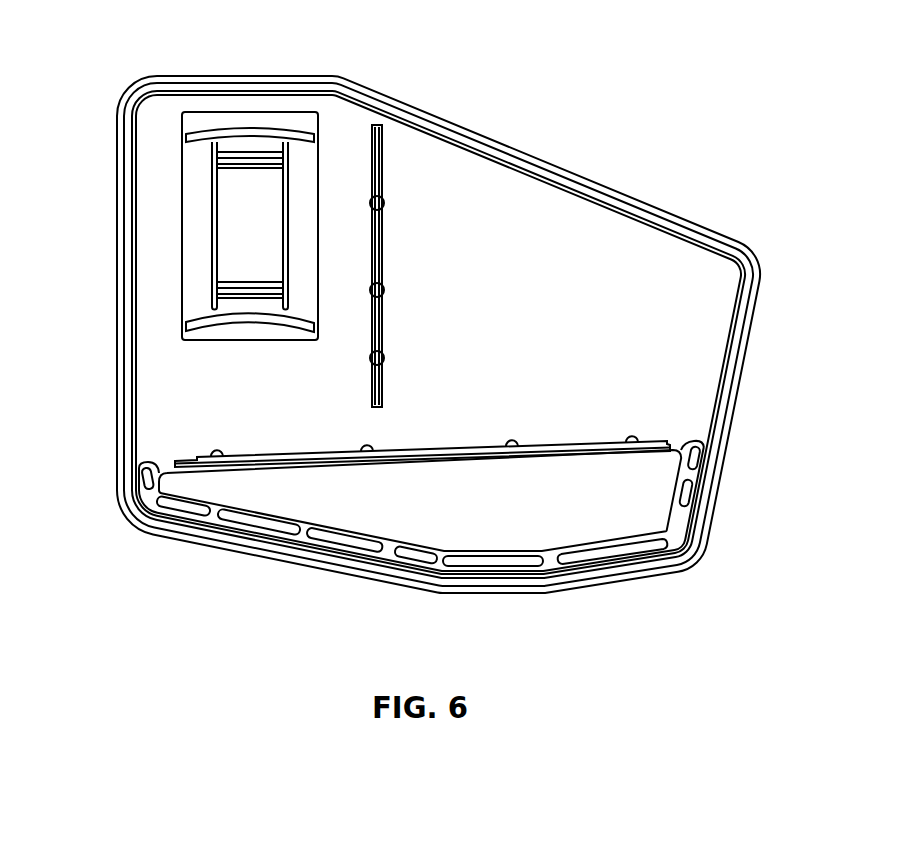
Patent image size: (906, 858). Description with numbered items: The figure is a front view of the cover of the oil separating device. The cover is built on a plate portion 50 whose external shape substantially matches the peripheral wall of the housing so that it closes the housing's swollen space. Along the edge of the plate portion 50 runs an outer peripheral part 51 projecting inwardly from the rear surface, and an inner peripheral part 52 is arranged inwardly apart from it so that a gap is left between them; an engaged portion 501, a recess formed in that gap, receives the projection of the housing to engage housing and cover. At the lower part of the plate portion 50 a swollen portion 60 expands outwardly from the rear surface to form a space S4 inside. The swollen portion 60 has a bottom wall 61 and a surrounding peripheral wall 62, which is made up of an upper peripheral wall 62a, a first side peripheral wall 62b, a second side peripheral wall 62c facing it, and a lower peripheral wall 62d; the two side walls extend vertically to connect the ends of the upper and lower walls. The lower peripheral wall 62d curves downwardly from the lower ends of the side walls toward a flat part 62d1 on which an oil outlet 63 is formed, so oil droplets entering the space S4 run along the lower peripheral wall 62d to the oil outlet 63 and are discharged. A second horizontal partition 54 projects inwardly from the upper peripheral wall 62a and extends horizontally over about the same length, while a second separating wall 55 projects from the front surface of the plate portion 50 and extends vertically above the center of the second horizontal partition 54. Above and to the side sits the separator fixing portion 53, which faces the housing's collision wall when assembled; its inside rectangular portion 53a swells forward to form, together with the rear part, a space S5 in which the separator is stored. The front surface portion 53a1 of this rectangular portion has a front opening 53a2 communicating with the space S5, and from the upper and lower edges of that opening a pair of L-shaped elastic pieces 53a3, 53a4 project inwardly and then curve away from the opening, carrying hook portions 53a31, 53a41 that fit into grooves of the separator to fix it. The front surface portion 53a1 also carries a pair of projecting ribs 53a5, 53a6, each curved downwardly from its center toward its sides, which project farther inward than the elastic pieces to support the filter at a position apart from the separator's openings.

The plate portion 50 is at (459, 334).
The outer peripheral part 51 is at (710, 232).
The inner peripheral part 52 is at (567, 186).
The engaged portion 501 is at (675, 217).
The separator fixing portion 53 is at (192, 219).
The inside rectangular portion 53a is at (192, 122).
The front surface portion 53a1 is at (182, 182).
The front opening 53a2 is at (273, 163).
The elastic piece 53a3 is at (263, 150).
The hook portion 53a31 is at (225, 268).
The elastic piece 53a4 is at (267, 284).
The hook portion 53a41 is at (255, 312).
The projecting rib 53a5 is at (228, 130).
The projecting rib 53a6 is at (243, 284).
The space S5 is at (218, 224).
The second horizontal partition 54 is at (630, 438).
The second separating wall 55 is at (380, 178).
The swollen portion 60 is at (420, 533).
The bottom wall 61 is at (365, 527).
The peripheral wall 62 is at (687, 467).
The upper peripheral wall 62a is at (175, 462).
The first side peripheral wall 62b is at (677, 497).
The second side peripheral wall 62c is at (152, 482).
The lower peripheral wall 62d is at (205, 515).
The flat part 62d1 is at (532, 540).
The oil outlet 63 is at (440, 537).
The space S4 is at (600, 527).